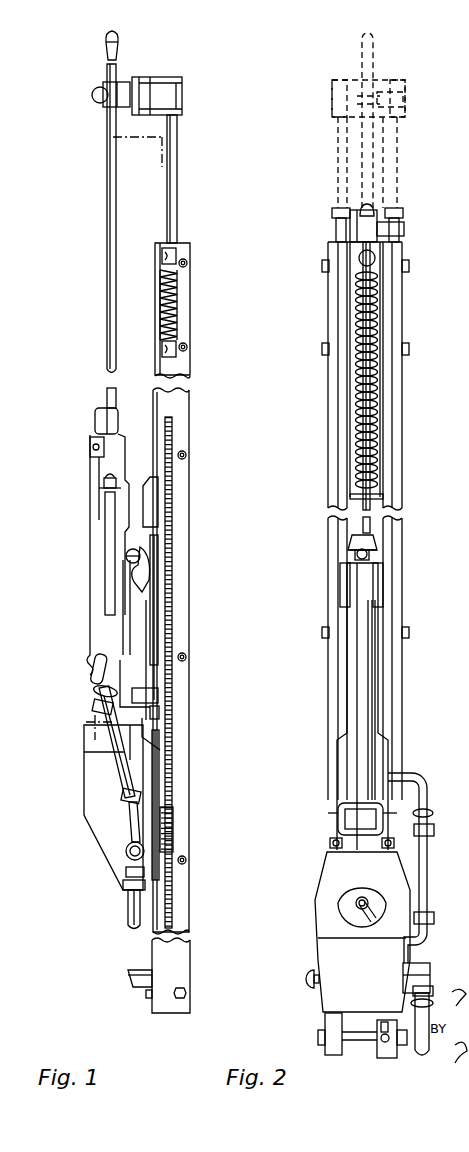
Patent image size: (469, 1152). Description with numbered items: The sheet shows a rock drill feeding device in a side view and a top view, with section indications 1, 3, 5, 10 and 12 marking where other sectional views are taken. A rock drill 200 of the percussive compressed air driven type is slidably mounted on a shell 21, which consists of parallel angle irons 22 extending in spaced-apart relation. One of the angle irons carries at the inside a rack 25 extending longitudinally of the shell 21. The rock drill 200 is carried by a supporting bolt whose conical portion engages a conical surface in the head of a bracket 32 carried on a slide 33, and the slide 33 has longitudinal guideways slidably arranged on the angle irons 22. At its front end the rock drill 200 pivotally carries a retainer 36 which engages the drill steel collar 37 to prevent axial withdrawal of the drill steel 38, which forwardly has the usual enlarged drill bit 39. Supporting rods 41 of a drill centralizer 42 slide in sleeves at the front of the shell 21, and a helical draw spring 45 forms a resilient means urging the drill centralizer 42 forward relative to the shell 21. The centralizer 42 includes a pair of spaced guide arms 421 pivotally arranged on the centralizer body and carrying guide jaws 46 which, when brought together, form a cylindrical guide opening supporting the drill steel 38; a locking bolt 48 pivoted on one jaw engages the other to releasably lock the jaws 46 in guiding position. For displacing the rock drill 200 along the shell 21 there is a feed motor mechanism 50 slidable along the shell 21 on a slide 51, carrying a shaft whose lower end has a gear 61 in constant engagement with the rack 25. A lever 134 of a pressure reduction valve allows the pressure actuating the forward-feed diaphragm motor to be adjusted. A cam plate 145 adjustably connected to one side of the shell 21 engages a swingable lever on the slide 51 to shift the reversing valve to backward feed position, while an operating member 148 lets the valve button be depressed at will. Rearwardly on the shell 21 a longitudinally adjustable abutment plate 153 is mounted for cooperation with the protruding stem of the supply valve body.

In FIG. 2, the section line 1- 1 is at (372, 178).
In FIG. 1, the section line 3- 3 is at (134, 18).
In FIG. 1, the section line 5- 5 is at (140, 672).
In FIG. 1, the section line 10- 10 is at (117, 558).
In FIG. 1, the section line 12- 12 is at (75, 812).
In FIG. 1, the shell 21 is at (187, 413).
In FIG. 2, the shell 21 is at (400, 455).
In FIG. 2, the angle irons 22 is at (394, 422).
In FIG. 1, the rack 25 is at (172, 488).
In FIG. 1, the bracket 32 is at (143, 580).
In FIG. 1, the slide 33 is at (153, 620).
In FIG. 1, the retainer 36 is at (96, 415).
In FIG. 2, the retainer 36 is at (373, 545).
In FIG. 2, the drill steel collar 37 is at (357, 548).
In FIG. 1, the drill steel 38 is at (109, 182).
In FIG. 2, the drill steel 38 is at (365, 412).
In FIG. 1, the drill bit 39 is at (107, 40).
In FIG. 2, the drill bit 39 is at (378, 207).
In FIG. 1, the supporting rods 41 is at (170, 190).
In FIG. 1, the drill centralizer 42 is at (153, 80).
In FIG. 1, the helical draw spring 45 is at (173, 307).
In FIG. 2, the helical draw spring 45 is at (360, 372).
In FIG. 1, the guide jaws 46 is at (112, 90).
In FIG. 2, the guide jaws 46 is at (353, 232).
In FIG. 1, the locking bolt 48 is at (92, 95).
In FIG. 1, the feed motor mechanism 50 is at (92, 772).
In FIG. 2, the feed motor mechanism 50 is at (326, 873).
In FIG. 1, the slide 51 is at (158, 748).
In FIG. 1, the gear 61 is at (166, 842).
In FIG. 2, the lever 134 is at (363, 915).
In FIG. 1, the cam plate 145 is at (150, 517).
In FIG. 2, the operating member 148 is at (311, 975).
In FIG. 1, the abutment plate 153 is at (137, 972).
In FIG. 1, the rock drill 200 is at (94, 486).
In FIG. 2, the rock drill 200 is at (358, 673).
In FIG. 1, the guide arms 421 is at (130, 97).